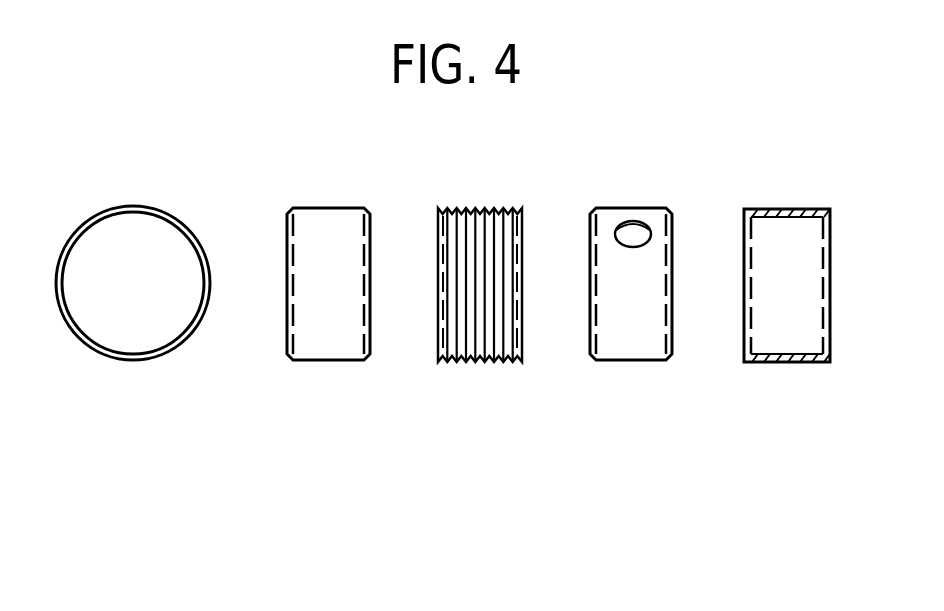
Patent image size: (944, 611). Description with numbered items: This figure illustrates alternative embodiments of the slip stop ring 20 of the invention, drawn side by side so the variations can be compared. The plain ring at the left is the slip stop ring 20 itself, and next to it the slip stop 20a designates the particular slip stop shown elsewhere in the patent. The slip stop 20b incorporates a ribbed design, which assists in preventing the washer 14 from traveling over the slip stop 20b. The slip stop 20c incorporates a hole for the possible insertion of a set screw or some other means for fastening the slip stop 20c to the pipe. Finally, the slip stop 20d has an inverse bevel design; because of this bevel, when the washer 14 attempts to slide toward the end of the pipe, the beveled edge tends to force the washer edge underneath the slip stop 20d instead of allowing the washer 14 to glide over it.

The washer 14 is at (628, 236).
The slip stop ring 20 is at (130, 362).
The slip stop 20a is at (323, 361).
The slip stop 20b is at (478, 362).
The slip stop 20c is at (636, 319).
The slip stop 20d is at (798, 362).